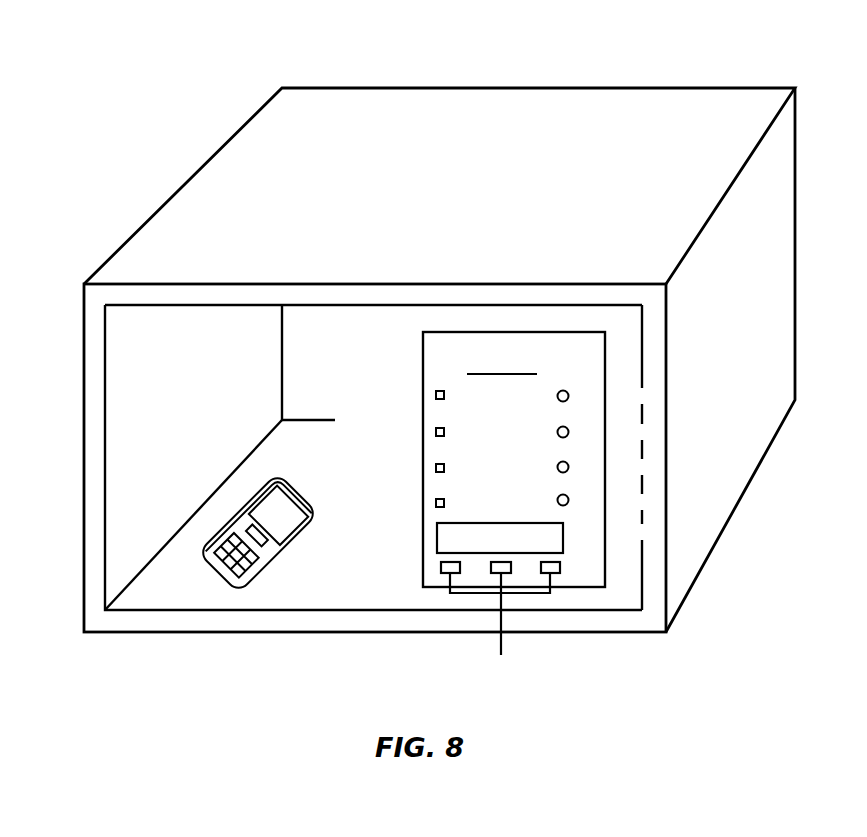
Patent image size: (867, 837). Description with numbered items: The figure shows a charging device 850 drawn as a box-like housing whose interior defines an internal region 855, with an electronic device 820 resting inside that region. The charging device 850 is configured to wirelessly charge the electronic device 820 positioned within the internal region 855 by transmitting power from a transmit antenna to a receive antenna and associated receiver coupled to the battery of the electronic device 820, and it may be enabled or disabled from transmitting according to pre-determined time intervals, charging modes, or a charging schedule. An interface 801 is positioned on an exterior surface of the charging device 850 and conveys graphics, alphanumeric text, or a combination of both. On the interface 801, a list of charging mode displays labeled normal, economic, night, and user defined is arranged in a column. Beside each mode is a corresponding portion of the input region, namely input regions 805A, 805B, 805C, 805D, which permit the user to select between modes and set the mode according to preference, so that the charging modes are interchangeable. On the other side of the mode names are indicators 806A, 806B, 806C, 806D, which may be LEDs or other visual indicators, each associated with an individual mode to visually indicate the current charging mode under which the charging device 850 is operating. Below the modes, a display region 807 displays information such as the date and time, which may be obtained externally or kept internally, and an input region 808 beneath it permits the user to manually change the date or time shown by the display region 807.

The charging device 850 is at (110, 106).
The internal region 855 is at (133, 483).
The interface 801 is at (565, 332).
The input region 805A is at (436, 395).
The input region 805B is at (436, 432).
The input region 805C is at (436, 468).
The input region 805D is at (436, 503).
The indicator 806A is at (569, 397).
The indicator 806B is at (569, 433).
The indicator 806C is at (569, 468).
The indicator 806D is at (569, 501).
The display region 807 is at (564, 537).
The input region 808 is at (500, 624).
The electronic device 820 is at (283, 557).